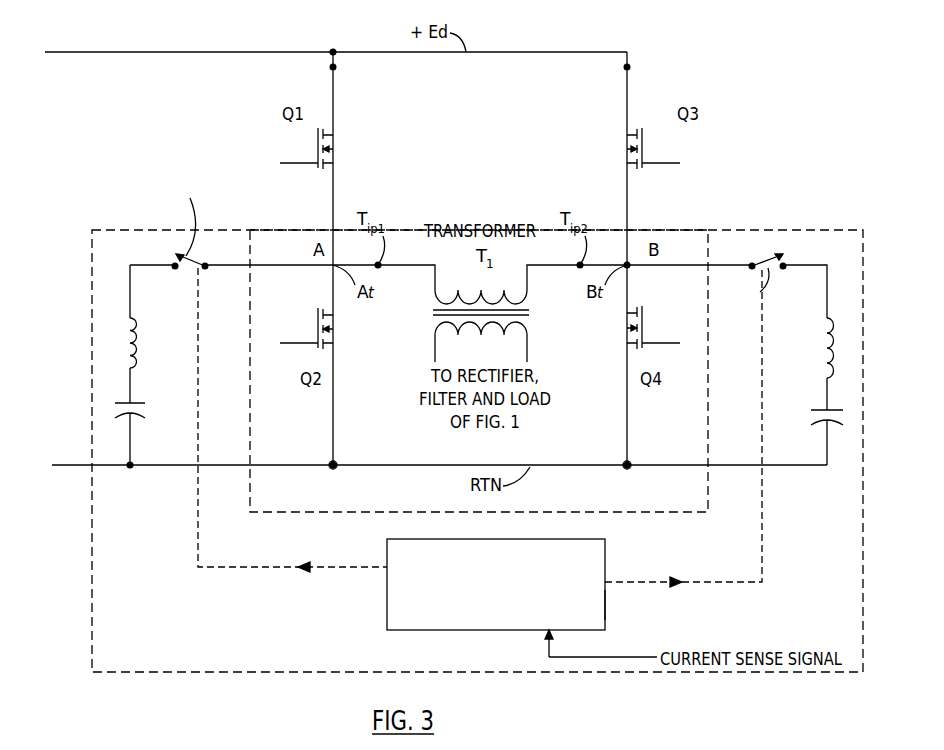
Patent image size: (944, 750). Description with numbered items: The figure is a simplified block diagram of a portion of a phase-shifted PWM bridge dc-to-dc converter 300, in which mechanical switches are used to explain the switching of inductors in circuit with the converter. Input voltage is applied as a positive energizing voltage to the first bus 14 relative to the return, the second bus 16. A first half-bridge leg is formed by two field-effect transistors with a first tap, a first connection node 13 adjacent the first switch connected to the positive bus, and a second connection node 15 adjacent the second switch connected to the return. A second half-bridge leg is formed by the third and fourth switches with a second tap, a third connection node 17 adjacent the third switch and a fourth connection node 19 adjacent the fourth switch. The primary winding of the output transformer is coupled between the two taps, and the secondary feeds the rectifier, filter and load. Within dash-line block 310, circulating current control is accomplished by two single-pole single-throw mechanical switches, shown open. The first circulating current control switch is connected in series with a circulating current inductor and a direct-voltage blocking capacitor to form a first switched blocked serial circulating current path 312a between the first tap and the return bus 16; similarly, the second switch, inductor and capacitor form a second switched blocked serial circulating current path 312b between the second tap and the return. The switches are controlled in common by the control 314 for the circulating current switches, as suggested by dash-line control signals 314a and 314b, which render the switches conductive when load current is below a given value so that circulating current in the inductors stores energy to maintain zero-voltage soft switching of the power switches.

The first connection node 13 is at (333, 67).
The first bus 14 is at (238, 52).
The second connection node 15 is at (333, 465).
The second bus 16 is at (425, 465).
The third connection node 17 is at (627, 67).
The fourth connection node 19 is at (627, 431).
The dc-to-dc converter 300 is at (247, 709).
The circulating current control block 310 is at (492, 668).
The first switched blocked serial circulating current path 312a is at (178, 307).
The second switched blocked serial circulating current path 312b is at (816, 318).
The control for circulating current switches 314 is at (605, 605).
The first control signal line 314a is at (270, 570).
The second control signal line 314b is at (752, 584).